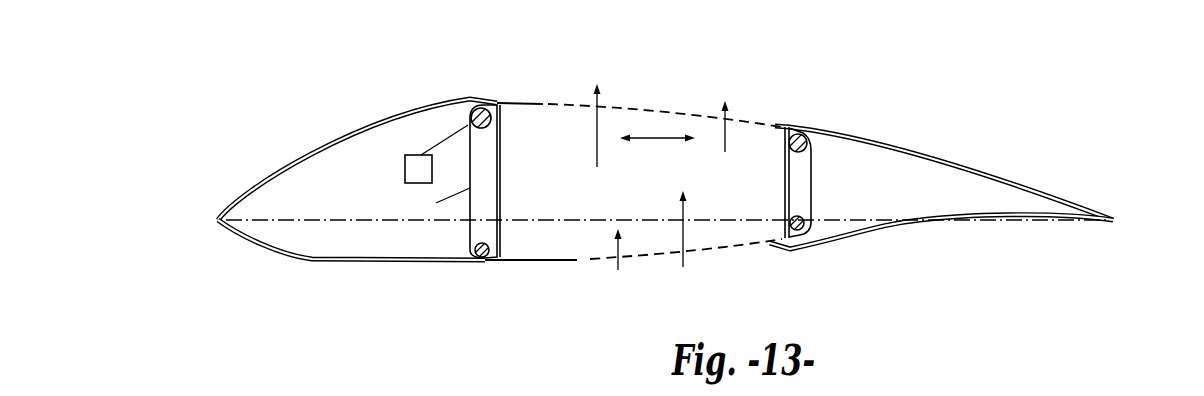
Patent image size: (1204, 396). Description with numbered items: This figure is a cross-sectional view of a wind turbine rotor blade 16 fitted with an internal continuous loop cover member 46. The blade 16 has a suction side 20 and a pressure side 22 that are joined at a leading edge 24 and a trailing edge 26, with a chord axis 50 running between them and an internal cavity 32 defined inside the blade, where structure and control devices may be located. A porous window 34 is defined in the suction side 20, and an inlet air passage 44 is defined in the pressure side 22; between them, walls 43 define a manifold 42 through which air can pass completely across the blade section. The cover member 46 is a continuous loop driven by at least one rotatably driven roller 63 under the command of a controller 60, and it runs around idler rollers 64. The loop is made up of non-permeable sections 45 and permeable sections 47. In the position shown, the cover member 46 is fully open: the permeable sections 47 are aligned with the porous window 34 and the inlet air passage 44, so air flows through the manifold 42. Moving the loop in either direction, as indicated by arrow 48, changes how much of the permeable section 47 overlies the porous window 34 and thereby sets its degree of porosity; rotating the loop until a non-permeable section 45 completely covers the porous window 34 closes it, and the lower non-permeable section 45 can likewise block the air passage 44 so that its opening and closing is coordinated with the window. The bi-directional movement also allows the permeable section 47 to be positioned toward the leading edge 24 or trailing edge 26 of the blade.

The wind turbine rotor blade 16 is at (1086, 115).
The suction side 20 is at (433, 102).
The pressure side 22 is at (313, 261).
The leading edge 24 is at (217, 220).
The trailing edge 26 is at (1116, 221).
The internal cavity 32 is at (837, 155).
The porous window 34 is at (692, 93).
The manifold 42 is at (655, 203).
The walls 43 is at (500, 175).
The inlet air passage 44 is at (600, 257).
The non-permeable section 45 is at (441, 202).
The cover member 46 is at (518, 105).
The permeable section 47 is at (690, 250).
The arrow 48 is at (636, 140).
The chord axis 50 is at (276, 218).
The controller 60 is at (404, 165).
The rotatably driven roller 63 is at (474, 108).
The idler roller 64 is at (800, 148).